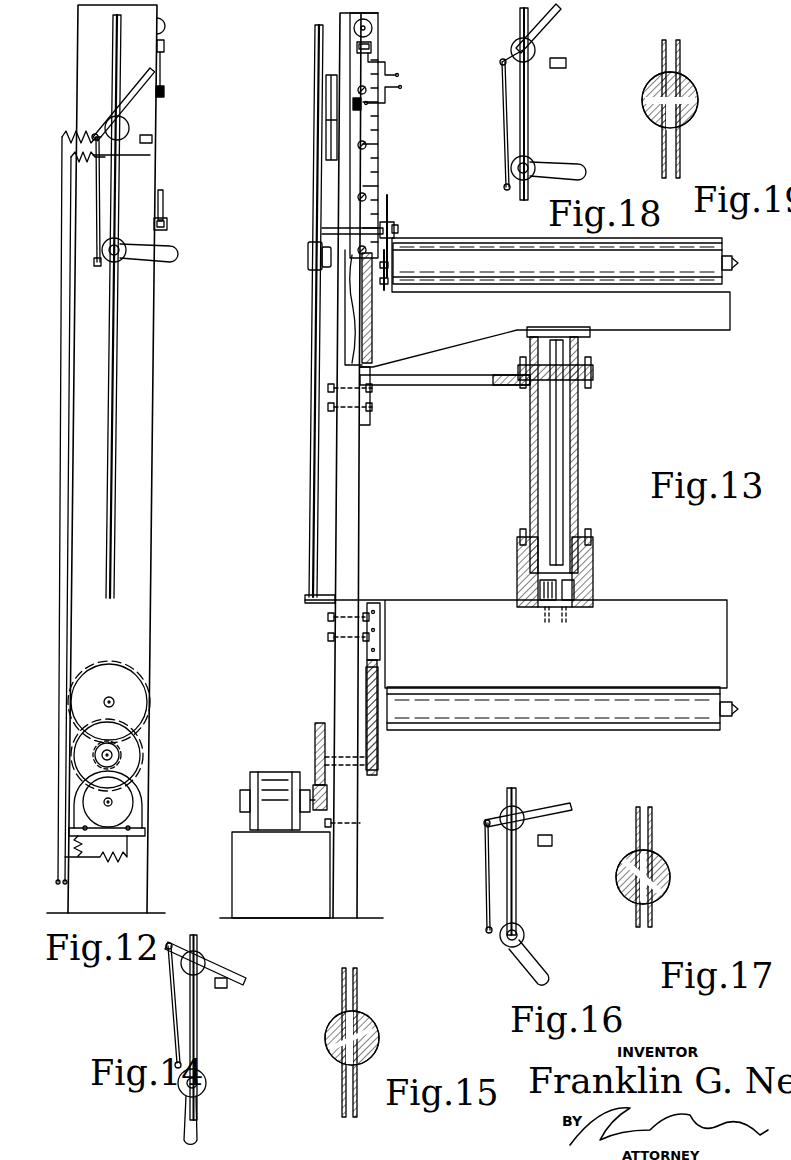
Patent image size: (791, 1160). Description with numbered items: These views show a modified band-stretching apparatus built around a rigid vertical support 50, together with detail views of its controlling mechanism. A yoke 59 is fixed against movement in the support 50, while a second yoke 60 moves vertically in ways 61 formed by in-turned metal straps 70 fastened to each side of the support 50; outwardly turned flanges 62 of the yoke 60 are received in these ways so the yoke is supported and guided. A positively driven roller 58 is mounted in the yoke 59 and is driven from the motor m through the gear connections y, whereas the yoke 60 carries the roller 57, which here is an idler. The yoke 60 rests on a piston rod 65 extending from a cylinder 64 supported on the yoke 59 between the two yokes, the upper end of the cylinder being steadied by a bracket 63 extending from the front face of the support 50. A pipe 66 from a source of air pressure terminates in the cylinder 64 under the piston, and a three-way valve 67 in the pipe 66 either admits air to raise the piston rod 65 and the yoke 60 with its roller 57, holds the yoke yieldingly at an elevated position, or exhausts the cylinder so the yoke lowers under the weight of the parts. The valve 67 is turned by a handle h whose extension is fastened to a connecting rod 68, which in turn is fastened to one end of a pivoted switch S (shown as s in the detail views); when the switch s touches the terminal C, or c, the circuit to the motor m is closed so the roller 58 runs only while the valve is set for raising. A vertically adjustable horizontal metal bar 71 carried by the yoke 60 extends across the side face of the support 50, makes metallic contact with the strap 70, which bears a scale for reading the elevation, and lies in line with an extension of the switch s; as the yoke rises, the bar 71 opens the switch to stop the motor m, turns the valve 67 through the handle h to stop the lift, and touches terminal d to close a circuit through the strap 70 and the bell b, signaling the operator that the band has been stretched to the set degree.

In FIG. 12, the rigid vertical support 50 is at (150, 520).
In FIG. 13, the rigid vertical support 50 is at (348, 860).
In FIG. 13, the roller 57 is at (443, 254).
In FIG. 13, the positively driven roller 58 is at (643, 725).
In FIG. 13, the yoke 59 is at (697, 612).
In FIG. 13, the yoke 60 is at (695, 318).
In FIG. 13, the ways 61 is at (373, 286).
In FIG. 13, the outwardly turned flanges 62 is at (374, 338).
In FIG. 13, the bracket 63 is at (450, 385).
In FIG. 13, the cylinder 64 is at (579, 465).
In FIG. 13, the piston rod 65 is at (558, 428).
In FIG. 12, the pipe 66 is at (115, 415).
In FIG. 13, the pipe 66 is at (312, 387).
In FIG. 14, the pipe 66 is at (198, 1015).
In FIG. 15, the pipe 66 is at (358, 985).
In FIG. 16, the pipe 66 is at (518, 893).
In FIG. 17, the pipe 66 is at (654, 820).
In FIG. 18, the pipe 66 is at (523, 104).
In FIG. 19, the pipe 66 is at (682, 42).
In FIG. 12, the three-way valve 67 is at (122, 260).
In FIG. 13, the three-way valve 67 is at (307, 258).
In FIG. 15, the three-way valve 67 is at (378, 1033).
In FIG. 17, the three-way valve 67 is at (671, 877).
In FIG. 19, the three-way valve 67 is at (697, 92).
In FIG. 12, the connecting rod 68 is at (98, 203).
In FIG. 14, the connecting rod 68 is at (173, 1008).
In FIG. 16, the connecting rod 68 is at (486, 878).
In FIG. 18, the connecting rod 68 is at (503, 122).
In FIG. 13, the metal strap 70 is at (374, 129).
In FIG. 12, the horizontal bar 71 is at (163, 220).
In FIG. 13, the horizontal bar 71 is at (355, 223).
In FIG. 12, the bell b is at (166, 26).
In FIG. 13, the bell b is at (373, 28).
In FIG. 12, the pivoted switch S is at (161, 93).
In FIG. 14, the pivoted switch s is at (225, 967).
In FIG. 16, the pivoted switch s is at (560, 810).
In FIG. 18, the pivoted switch s is at (555, 16).
In FIG. 12, the terminal C is at (152, 139).
In FIG. 14, the terminal c is at (227, 985).
In FIG. 16, the terminal c is at (552, 840).
In FIG. 18, the terminal c is at (566, 63).
In FIG. 13, the terminal d is at (354, 103).
In FIG. 12, the handle h is at (165, 248).
In FIG. 16, the handle h is at (540, 960).
In FIG. 18, the handle h is at (570, 160).
In FIG. 13, the motor m is at (267, 772).
In FIG. 13, the gear connections y is at (364, 768).